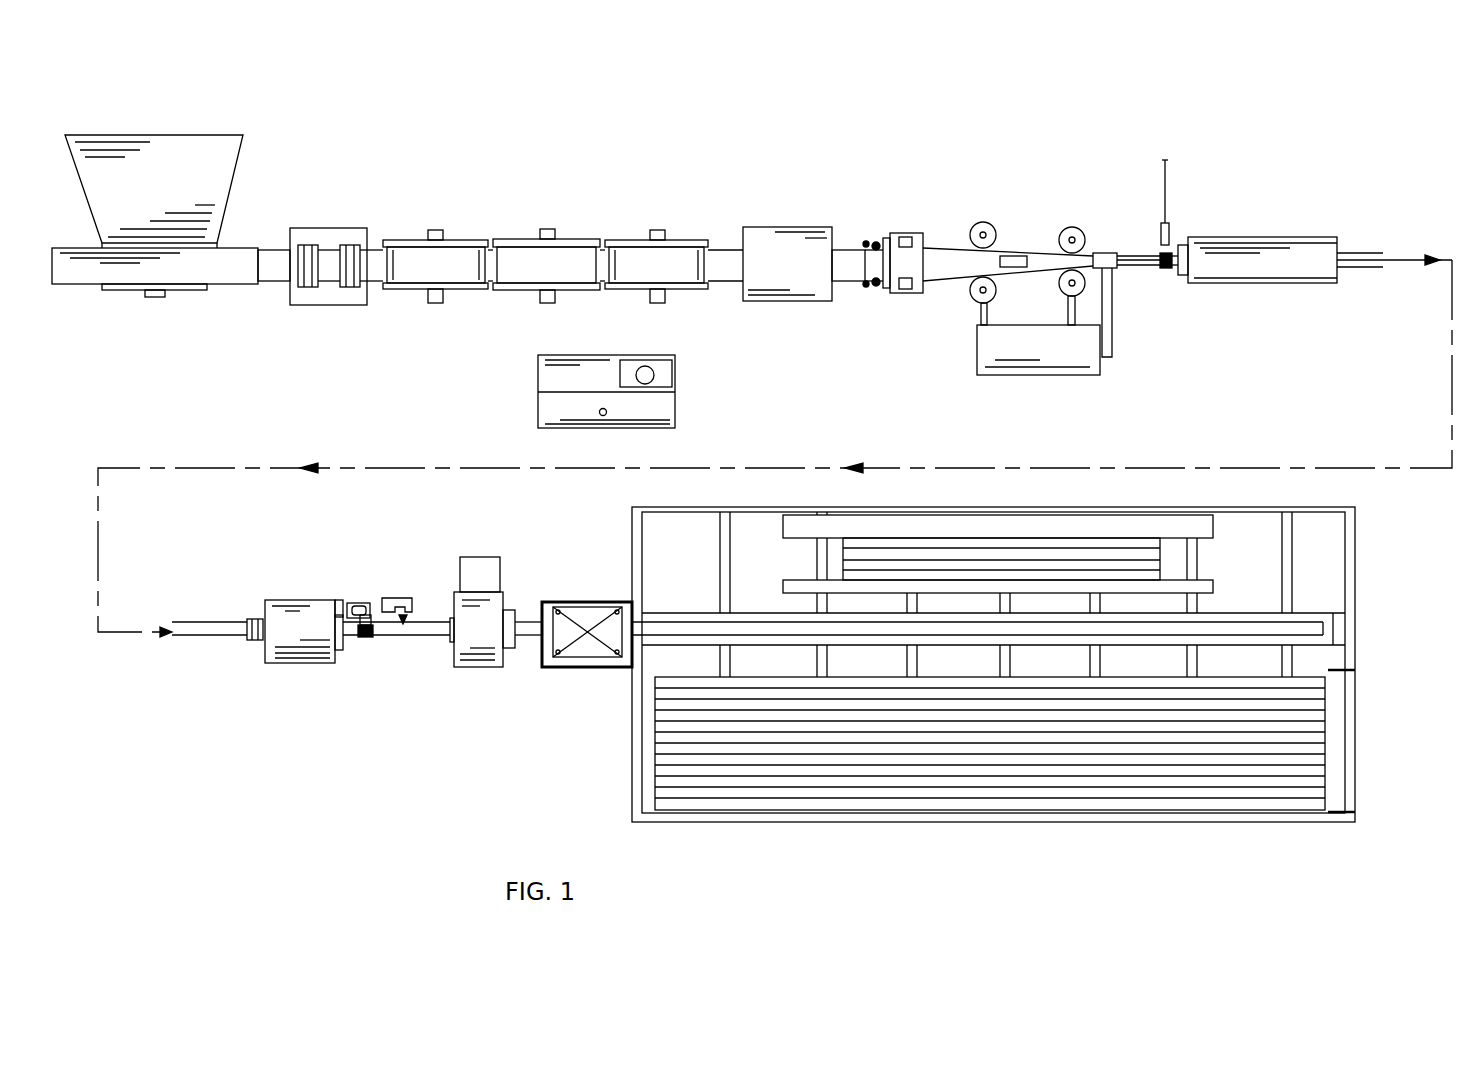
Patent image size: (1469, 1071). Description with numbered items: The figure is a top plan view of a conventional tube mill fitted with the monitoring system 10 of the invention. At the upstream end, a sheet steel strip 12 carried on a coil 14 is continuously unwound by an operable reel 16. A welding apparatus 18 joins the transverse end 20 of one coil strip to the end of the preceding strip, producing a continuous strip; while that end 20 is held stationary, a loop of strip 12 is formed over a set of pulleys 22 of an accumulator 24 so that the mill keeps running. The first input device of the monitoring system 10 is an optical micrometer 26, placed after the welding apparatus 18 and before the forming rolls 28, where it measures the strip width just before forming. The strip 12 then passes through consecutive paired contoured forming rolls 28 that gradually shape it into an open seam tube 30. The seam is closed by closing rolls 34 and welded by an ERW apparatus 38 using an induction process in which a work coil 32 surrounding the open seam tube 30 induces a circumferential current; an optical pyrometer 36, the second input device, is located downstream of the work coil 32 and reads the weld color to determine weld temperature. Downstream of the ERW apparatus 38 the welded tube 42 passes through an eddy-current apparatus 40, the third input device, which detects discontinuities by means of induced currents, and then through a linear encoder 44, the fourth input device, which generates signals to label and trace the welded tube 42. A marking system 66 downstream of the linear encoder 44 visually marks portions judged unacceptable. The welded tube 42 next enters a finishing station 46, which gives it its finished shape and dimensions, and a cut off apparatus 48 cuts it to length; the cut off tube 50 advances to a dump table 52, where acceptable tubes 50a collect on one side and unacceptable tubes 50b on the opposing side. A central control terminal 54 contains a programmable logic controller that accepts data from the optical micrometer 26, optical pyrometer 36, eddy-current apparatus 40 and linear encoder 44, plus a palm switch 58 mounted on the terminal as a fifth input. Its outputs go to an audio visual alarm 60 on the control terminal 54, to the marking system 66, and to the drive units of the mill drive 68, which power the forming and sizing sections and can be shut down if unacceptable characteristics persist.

The monitoring system 10 is at (1312, 177).
The sheet steel strip 12 is at (143, 268).
The coil 14 is at (186, 289).
The reel 16 is at (212, 170).
The welding apparatus 18 is at (328, 235).
The transverse end 20 is at (246, 262).
The pulleys 22 is at (558, 242).
The accumulator 24 is at (760, 240).
The optical micrometer 26 is at (871, 213).
The forming rolls 28 is at (1060, 252).
The open seam tube 30 is at (1143, 255).
The work coil 32 is at (1164, 270).
The closing rolls 34 is at (1182, 243).
The optical pyrometer 36 is at (1182, 206).
The ERW apparatus 38 is at (1205, 283).
The eddy-current apparatus 40 is at (284, 675).
The welded tube 42 is at (217, 634).
The linear encoder 44 is at (369, 652).
The finishing station 46 is at (488, 668).
The cut off apparatus 48 is at (600, 668).
The cut off tube 50 is at (1032, 664).
The acceptable tubes 50a is at (1328, 812).
The unacceptable tubes 50b is at (1213, 515).
The dump table 52 is at (1340, 632).
The central control terminal 54 is at (597, 402).
The palm switch 58 is at (607, 412).
The audio visual alarm 60 is at (675, 381).
The marking system 66 is at (394, 586).
The mill drive 68 is at (1050, 345).